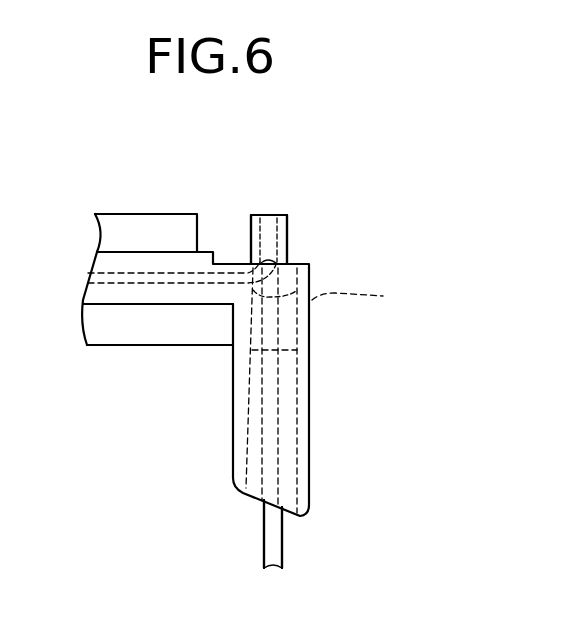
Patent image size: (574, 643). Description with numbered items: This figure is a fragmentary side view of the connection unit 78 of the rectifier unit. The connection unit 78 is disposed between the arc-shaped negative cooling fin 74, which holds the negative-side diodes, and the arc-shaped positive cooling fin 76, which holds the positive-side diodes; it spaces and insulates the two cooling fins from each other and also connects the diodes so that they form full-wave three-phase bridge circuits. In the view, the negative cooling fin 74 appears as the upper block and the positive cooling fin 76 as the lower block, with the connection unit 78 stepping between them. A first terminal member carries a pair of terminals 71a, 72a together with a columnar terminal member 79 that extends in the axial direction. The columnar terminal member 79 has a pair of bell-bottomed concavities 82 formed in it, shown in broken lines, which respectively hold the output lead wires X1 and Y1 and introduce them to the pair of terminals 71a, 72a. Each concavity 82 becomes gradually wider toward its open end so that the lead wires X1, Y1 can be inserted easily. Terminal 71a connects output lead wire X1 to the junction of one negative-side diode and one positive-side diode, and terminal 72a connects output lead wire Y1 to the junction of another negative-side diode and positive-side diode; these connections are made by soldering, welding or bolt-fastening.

The negative cooling fin 74 is at (128, 222).
The connection unit 78 is at (213, 218).
The positive cooling fin 76 is at (158, 343).
The connector body 79 is at (310, 345).
The terminal 71a is at (279, 214).
The terminal 72a is at (269, 239).
The bell-bottomed concavity 82 is at (362, 298).
The output lead wire X1 is at (283, 537).
The output lead wire Y1 is at (273, 534).